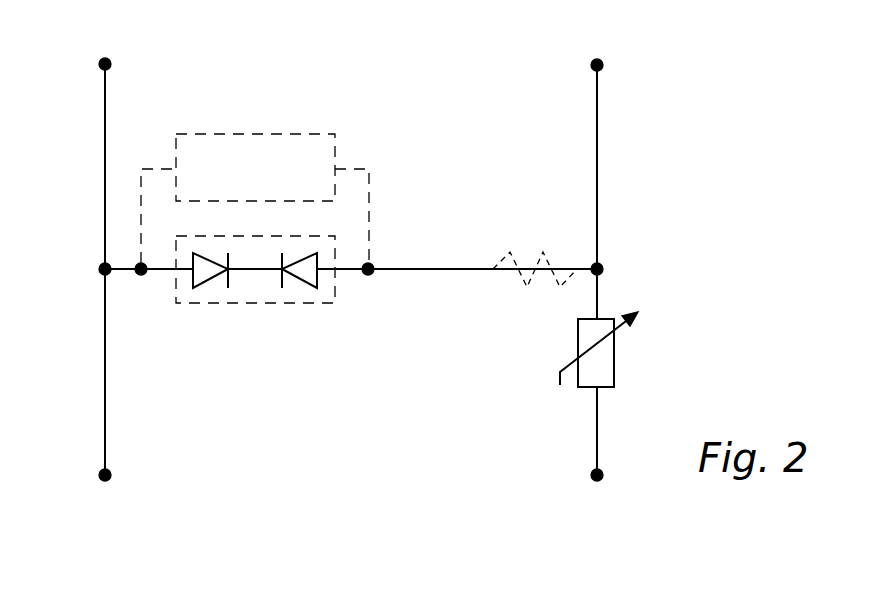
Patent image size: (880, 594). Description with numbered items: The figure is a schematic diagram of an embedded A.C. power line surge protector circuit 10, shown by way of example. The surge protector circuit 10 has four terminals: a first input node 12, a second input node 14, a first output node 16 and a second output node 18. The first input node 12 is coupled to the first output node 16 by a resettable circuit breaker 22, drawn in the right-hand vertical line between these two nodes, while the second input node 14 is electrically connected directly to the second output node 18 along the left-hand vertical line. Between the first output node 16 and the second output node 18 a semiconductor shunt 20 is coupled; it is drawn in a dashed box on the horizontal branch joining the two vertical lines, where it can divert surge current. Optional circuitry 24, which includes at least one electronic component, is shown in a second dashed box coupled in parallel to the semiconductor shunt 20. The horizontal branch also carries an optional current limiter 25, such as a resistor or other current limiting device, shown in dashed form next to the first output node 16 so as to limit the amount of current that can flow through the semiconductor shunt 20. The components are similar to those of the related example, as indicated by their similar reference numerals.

The power line surge protector circuit 10 is at (705, 185).
The first input node 12 is at (608, 475).
The second input node 14 is at (96, 482).
The first output node 16 is at (612, 65).
The second output node 18 is at (96, 65).
The semiconductor shunt 20 is at (283, 300).
The resettable circuit breaker 22 is at (603, 362).
The circuitry 24 is at (227, 145).
The current limiter 25 is at (508, 255).